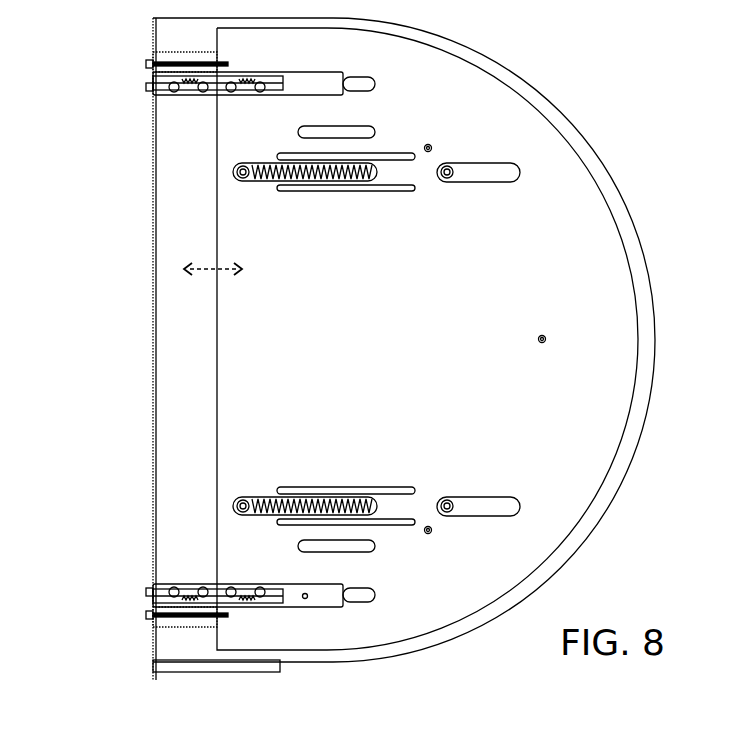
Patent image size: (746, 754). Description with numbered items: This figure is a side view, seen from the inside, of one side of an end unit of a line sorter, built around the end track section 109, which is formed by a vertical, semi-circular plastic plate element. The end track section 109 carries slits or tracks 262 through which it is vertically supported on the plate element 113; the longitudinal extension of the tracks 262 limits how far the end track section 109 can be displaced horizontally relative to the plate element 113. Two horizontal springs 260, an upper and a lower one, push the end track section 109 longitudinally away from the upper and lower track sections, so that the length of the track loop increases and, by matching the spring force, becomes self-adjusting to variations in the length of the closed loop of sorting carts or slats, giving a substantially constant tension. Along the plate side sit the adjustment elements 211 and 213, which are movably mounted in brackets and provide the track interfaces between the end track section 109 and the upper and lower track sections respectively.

The end track section 109 is at (593, 419).
The plate element 113 is at (185, 369).
The adjustment element 211 is at (142, 57).
The adjustment element 213 is at (142, 590).
The spring 260 is at (323, 502).
The track 262 is at (373, 503).